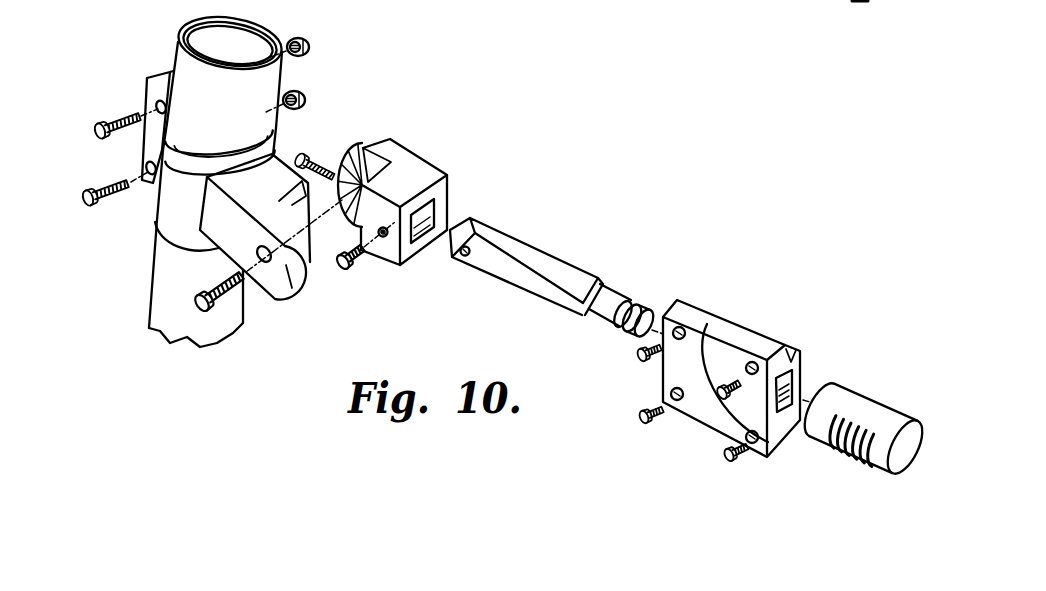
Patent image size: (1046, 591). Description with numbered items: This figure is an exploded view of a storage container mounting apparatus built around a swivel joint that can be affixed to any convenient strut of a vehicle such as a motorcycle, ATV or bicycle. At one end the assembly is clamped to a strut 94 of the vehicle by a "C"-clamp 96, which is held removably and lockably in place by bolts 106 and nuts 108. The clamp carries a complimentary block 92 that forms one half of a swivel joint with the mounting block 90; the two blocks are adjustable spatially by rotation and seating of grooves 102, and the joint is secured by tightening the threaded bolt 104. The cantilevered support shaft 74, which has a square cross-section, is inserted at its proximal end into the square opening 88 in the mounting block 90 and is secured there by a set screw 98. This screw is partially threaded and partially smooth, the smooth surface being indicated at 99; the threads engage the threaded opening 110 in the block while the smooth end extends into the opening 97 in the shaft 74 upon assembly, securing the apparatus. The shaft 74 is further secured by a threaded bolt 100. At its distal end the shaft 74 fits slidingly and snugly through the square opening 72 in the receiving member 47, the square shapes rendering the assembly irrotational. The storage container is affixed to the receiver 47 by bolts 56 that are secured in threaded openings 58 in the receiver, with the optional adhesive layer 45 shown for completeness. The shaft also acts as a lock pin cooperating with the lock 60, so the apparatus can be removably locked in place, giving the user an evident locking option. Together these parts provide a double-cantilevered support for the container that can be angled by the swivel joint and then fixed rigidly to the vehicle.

The adhesive layer 45 is at (710, 333).
The receiving member 47 is at (710, 310).
The bolts 56 is at (742, 464).
The threaded openings 58 is at (755, 375).
The lock 60 is at (827, 428).
The square opening 72 is at (805, 374).
The support shaft 74 is at (545, 243).
The square opening 88 is at (427, 207).
The mounting block 90 is at (405, 166).
The complimentary block 92 is at (302, 298).
The strut 94 is at (173, 287).
The C-clamp 96 is at (175, 199).
The opening 97 is at (482, 224).
The set screw 98 is at (348, 272).
The smooth surfaced portion 99 is at (367, 268).
The threaded bolt 100 is at (316, 150).
The grooves 102 is at (378, 150).
The threaded bolt 104 is at (245, 309).
The bolts 106 is at (114, 178).
The nuts 108 is at (308, 92).
The opening 110 is at (385, 240).